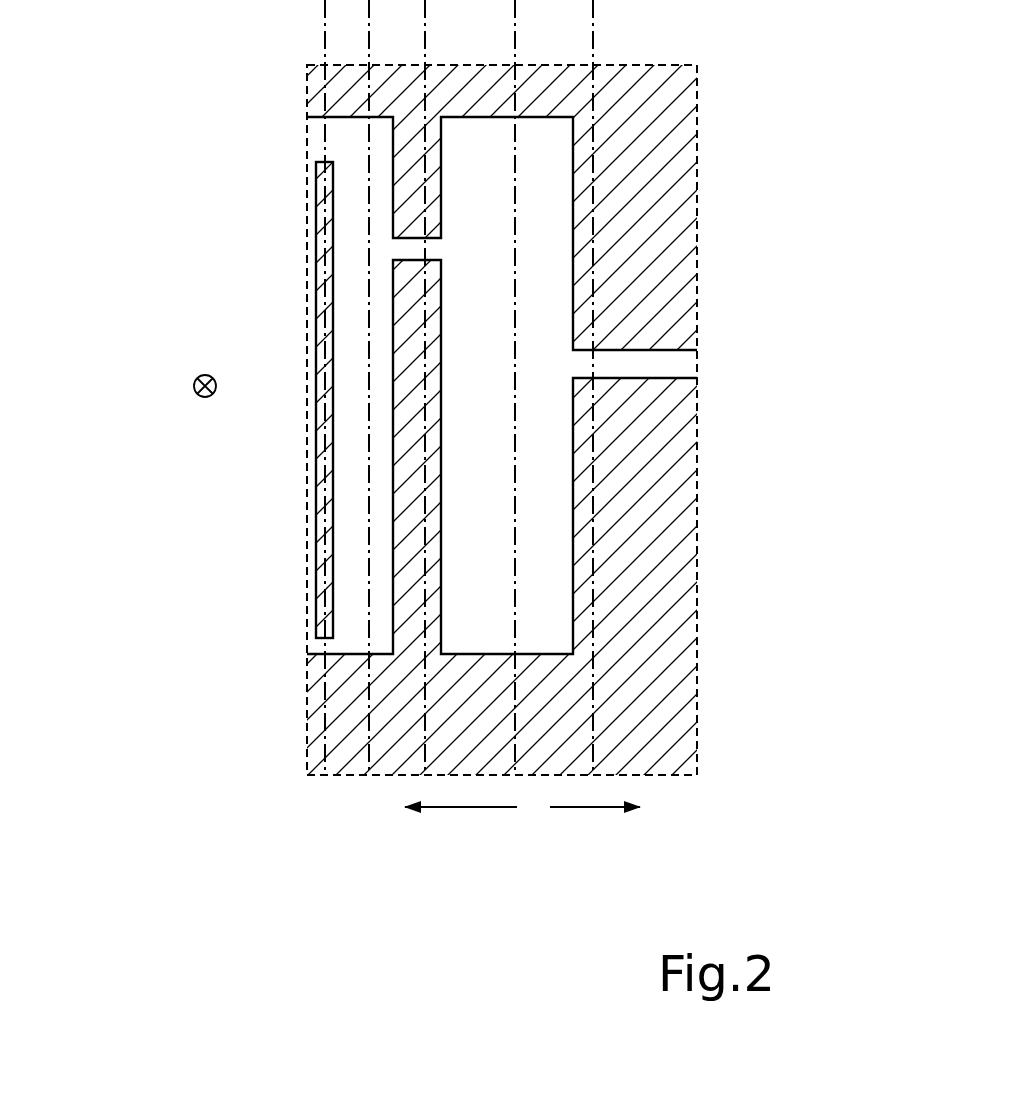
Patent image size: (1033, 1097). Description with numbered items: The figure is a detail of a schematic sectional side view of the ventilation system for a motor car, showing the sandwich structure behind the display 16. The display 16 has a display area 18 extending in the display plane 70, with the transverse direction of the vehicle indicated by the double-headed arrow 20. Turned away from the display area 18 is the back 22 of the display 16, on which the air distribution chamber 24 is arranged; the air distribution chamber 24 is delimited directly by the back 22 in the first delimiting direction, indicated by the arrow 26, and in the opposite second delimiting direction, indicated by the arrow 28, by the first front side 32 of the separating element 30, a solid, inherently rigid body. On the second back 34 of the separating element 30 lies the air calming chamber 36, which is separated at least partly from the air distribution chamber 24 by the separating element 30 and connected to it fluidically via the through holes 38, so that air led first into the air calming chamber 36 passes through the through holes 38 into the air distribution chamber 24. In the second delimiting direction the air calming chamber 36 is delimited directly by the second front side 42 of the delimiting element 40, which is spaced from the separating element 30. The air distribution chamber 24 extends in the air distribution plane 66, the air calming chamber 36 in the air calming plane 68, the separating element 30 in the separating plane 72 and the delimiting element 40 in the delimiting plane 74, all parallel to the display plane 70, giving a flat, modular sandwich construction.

The electronic display 16 is at (313, 176).
The display area 18 is at (310, 497).
The double-headed arrow 20 is at (193, 385).
The back 22 is at (335, 570).
The air distribution chamber 24 is at (343, 146).
The arrow 26 is at (472, 808).
The arrow 28 is at (597, 808).
The separating element 30 is at (415, 312).
The first front side 32 is at (390, 420).
The second back 34 is at (443, 184).
The air calming chamber 36 is at (553, 492).
The through holes 38 is at (403, 248).
The delimiting element 40 is at (573, 445).
The second front side 42 is at (569, 270).
The air distribution plane 66 is at (369, 705).
The air calming plane 68 is at (515, 665).
The display plane 70 is at (307, 713).
The separating plane 72 is at (425, 666).
The delimiting plane 74 is at (593, 660).